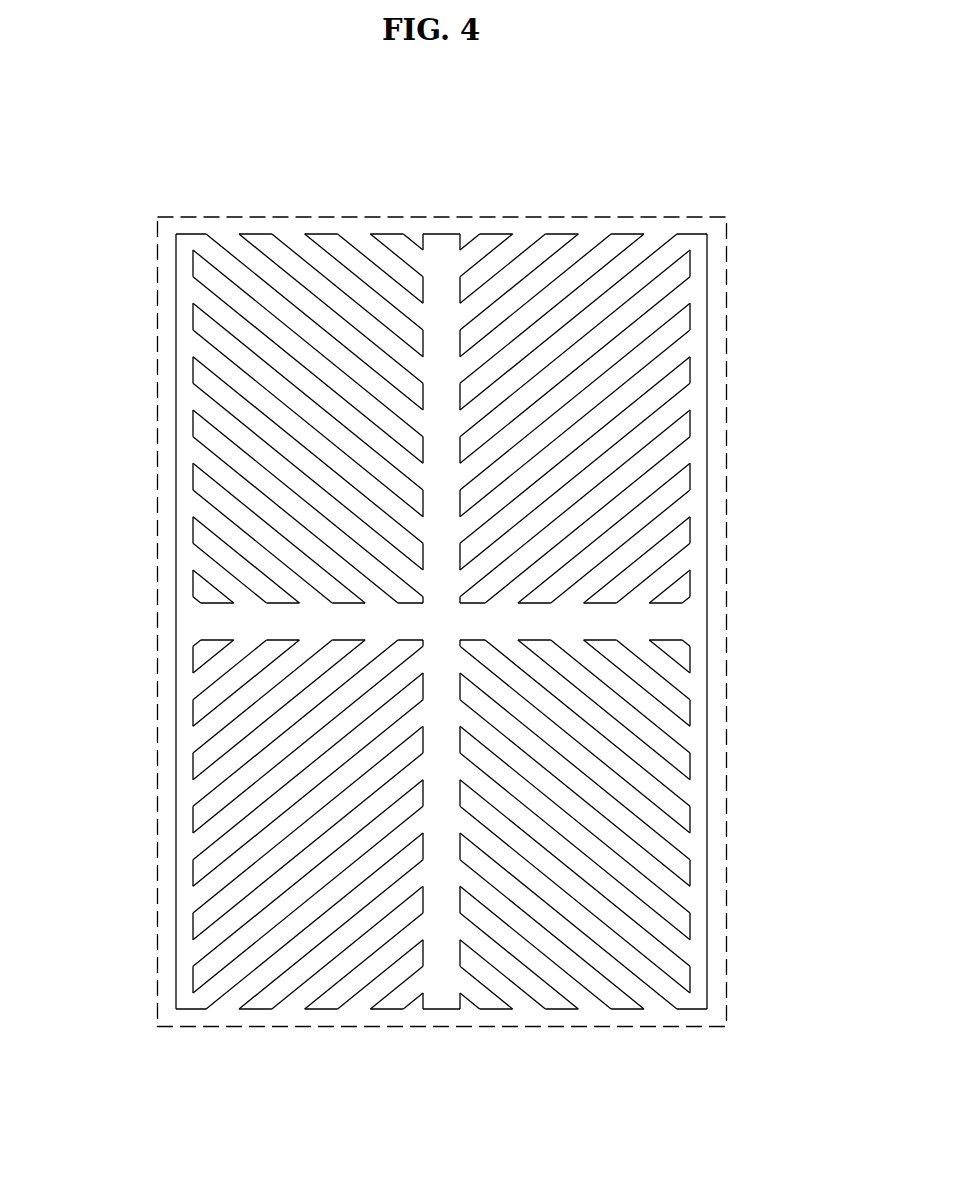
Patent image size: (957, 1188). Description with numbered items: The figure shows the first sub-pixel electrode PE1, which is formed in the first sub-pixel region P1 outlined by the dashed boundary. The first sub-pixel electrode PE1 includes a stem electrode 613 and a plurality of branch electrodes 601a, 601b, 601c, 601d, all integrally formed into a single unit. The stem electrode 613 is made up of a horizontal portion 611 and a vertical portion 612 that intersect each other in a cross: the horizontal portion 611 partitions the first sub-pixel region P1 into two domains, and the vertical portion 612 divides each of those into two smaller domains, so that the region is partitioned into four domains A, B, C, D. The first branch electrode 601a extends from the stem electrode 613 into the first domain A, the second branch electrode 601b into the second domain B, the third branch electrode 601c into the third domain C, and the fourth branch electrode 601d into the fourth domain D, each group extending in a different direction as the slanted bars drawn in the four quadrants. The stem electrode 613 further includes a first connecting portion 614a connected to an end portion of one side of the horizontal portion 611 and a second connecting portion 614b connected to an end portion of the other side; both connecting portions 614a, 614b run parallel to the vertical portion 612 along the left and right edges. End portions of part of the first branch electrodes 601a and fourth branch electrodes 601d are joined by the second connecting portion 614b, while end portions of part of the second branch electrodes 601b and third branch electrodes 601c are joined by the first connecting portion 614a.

The first sub-pixel region P1 is at (242, 217).
The first sub-pixel electrode PE1 is at (480, 188).
The first branch electrode 601a is at (632, 498).
The second branch electrode 601b is at (250, 494).
The third branch electrode 601c is at (253, 907).
The fourth branch electrode 601d is at (630, 907).
The horizontal portion 611 is at (665, 623).
The vertical portion 612 is at (442, 712).
The stem electrode 613 is at (550, 621).
The first connecting portion 614a is at (185, 343).
The second connecting portion 614b is at (698, 342).
The first domain A is at (717, 413).
The second domain B is at (165, 413).
The third domain C is at (165, 833).
The fourth domain D is at (717, 835).